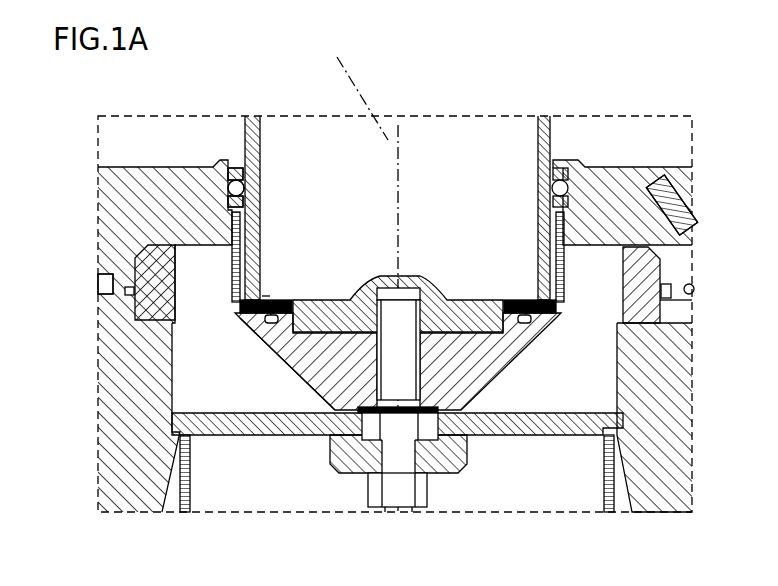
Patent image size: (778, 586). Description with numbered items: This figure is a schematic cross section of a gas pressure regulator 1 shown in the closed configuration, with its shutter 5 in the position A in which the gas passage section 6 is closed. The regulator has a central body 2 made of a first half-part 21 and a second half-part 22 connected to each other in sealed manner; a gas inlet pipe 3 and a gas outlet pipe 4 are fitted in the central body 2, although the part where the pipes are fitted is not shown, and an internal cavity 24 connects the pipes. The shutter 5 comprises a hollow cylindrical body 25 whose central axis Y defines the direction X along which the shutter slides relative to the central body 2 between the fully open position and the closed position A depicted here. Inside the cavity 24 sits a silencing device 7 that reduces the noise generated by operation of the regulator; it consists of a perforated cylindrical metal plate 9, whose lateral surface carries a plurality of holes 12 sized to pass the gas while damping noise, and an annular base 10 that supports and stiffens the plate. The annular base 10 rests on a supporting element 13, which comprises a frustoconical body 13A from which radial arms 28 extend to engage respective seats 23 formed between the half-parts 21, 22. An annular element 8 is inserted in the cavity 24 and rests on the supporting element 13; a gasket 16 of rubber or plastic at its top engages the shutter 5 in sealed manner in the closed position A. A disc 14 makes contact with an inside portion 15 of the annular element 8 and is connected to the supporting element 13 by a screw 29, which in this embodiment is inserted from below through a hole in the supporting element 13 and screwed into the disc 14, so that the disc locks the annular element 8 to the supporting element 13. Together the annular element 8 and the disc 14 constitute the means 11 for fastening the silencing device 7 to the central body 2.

The gas pressure regulator 1 is at (622, 95).
The central body 2 is at (90, 297).
The gas inlet pipe 3 is at (433, 108).
The gas outlet pipe 4 is at (343, 520).
The shutter 5 is at (263, 140).
The gas passage section 6 is at (255, 243).
The silencing device 7 is at (230, 227).
The annular element 8 is at (280, 387).
The cylindrical metal plate 9 is at (232, 227).
The annular base 10 is at (250, 300).
The means for fastening 11 is at (532, 303).
The holes 12 is at (230, 240).
The supporting element 13 is at (520, 360).
The frustoconical body 13A is at (330, 365).
The disc 14 is at (345, 293).
The inside portion 15 is at (588, 352).
The gasket 16 is at (660, 326).
The first half-part 21 is at (633, 170).
The second half-part 22 is at (678, 453).
The seats 23 is at (672, 262).
The internal cavity 24 is at (195, 383).
The hollow cylindrical body 25 is at (537, 150).
The radial arms 28 is at (230, 247).
The screw 29 is at (408, 373).
The position A is at (263, 295).